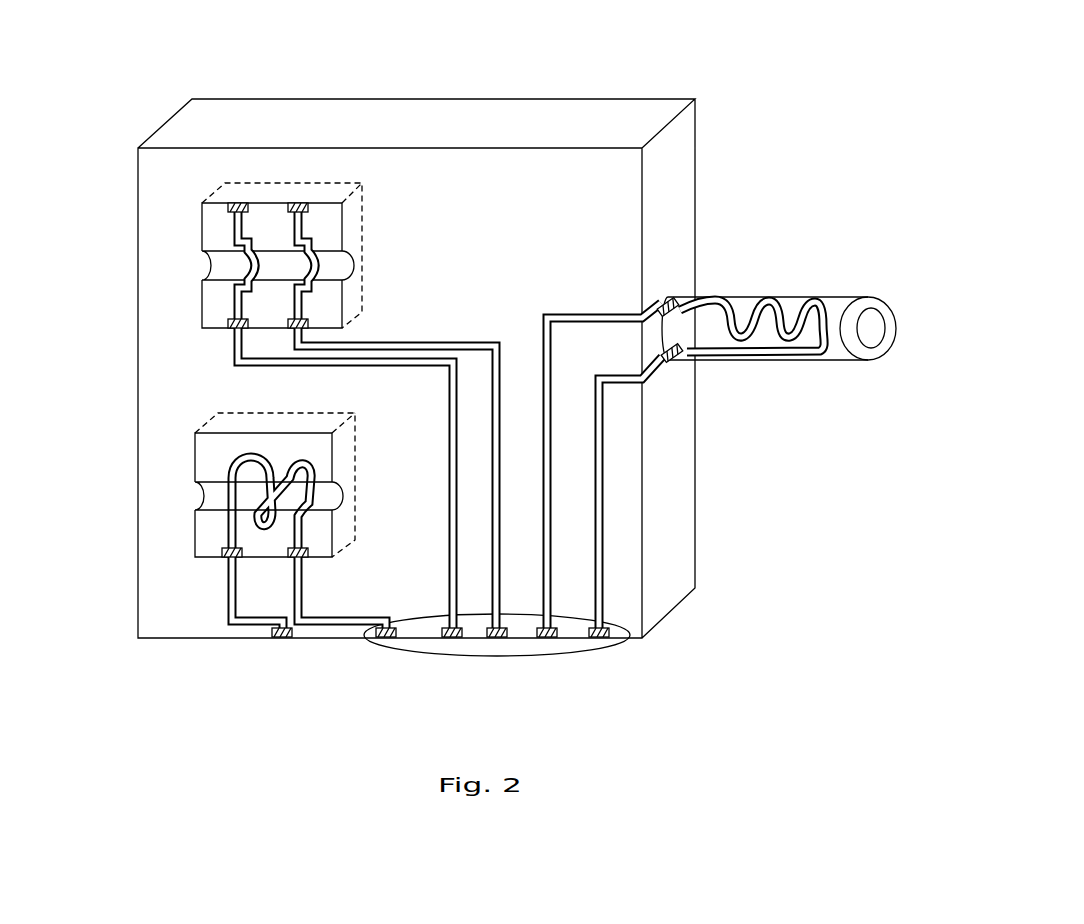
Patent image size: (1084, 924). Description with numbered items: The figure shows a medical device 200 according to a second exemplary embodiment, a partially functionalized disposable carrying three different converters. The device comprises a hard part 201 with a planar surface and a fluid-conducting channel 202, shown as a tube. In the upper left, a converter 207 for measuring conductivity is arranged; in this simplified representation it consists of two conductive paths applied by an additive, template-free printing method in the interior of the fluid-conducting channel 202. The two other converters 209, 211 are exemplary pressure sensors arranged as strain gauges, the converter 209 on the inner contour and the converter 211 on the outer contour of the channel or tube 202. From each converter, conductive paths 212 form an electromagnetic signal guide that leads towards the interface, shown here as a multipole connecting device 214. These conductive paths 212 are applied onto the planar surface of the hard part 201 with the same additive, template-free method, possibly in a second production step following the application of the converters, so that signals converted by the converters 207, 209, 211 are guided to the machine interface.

The medical device 200 is at (761, 158).
The hard part 201 is at (493, 256).
The fluid-conducting channel 202 is at (222, 270).
The converter for measuring the conductivity 207 is at (245, 222).
The converter 209 is at (226, 532).
The converter 211 is at (790, 296).
The conductive paths 212 is at (497, 582).
The multipole connecting device 214 is at (578, 652).